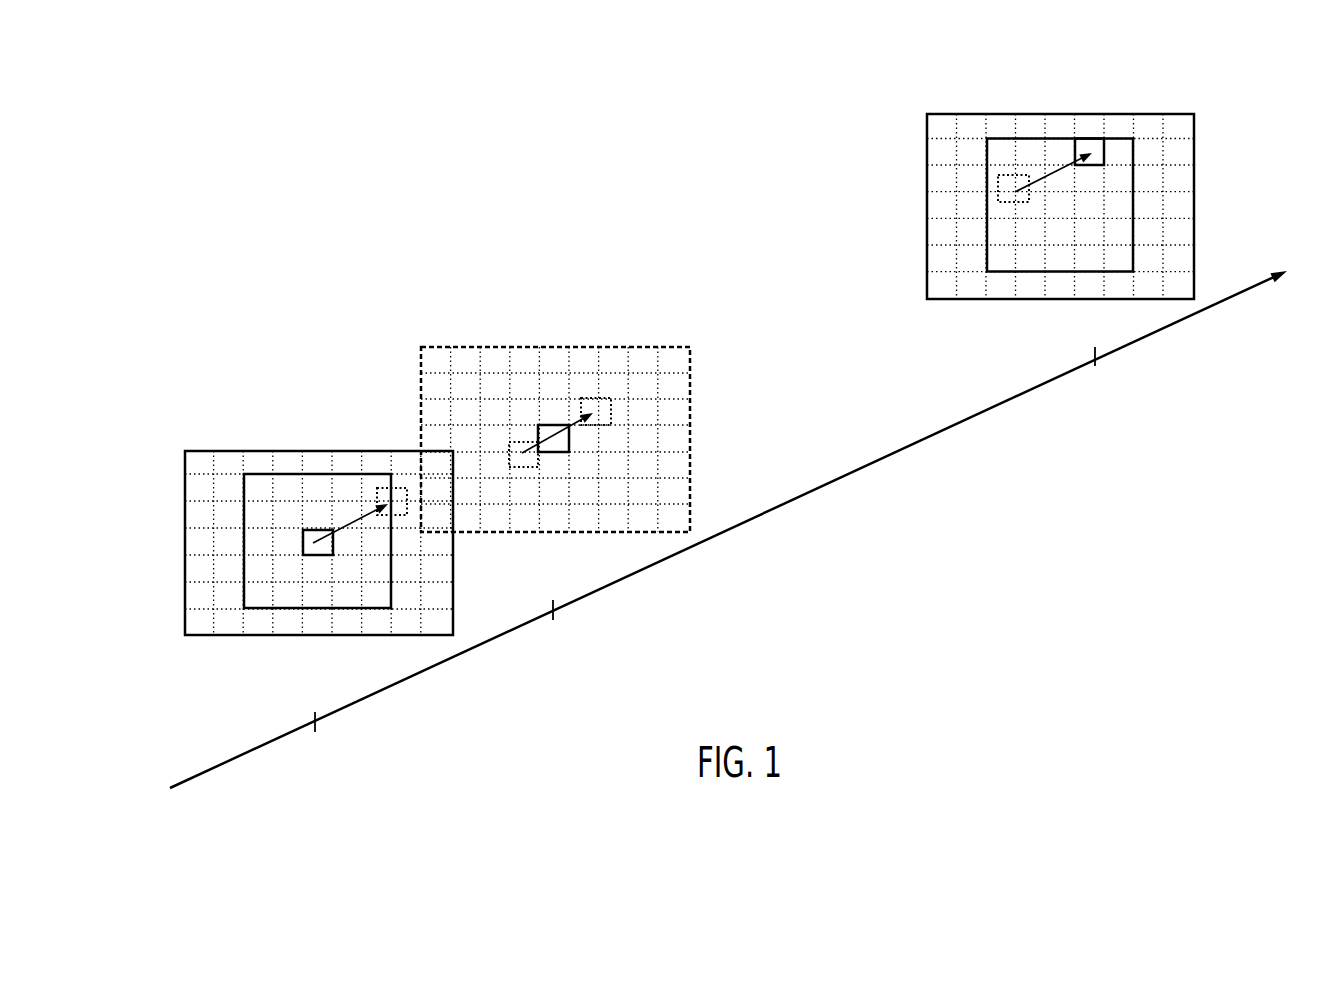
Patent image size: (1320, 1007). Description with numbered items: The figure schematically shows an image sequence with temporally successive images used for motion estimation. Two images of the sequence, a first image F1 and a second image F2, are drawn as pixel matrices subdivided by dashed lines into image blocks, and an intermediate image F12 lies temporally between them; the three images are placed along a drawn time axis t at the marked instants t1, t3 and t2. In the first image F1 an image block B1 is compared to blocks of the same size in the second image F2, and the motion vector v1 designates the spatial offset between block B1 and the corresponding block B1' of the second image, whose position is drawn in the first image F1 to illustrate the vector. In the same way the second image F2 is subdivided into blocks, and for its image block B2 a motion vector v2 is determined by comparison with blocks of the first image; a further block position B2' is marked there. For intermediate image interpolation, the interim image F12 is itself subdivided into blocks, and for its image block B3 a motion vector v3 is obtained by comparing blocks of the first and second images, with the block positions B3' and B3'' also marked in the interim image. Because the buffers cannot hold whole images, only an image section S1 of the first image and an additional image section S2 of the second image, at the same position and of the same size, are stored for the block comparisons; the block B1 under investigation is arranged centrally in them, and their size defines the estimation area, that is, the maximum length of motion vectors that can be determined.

The first image F1 is at (213, 451).
The intermediate image F12 is at (453, 347).
The second image F2 is at (958, 114).
The image section S1 is at (244, 528).
The additional image section S2 is at (1135, 170).
The image block B1 is at (311, 606).
The image block in the second image B1' is at (381, 460).
The image block of the second image B2 is at (1128, 110).
The displaced block position in second frame B2' is at (1016, 125).
The image block of the interim image B3 is at (640, 440).
The backward-projected block position B3' is at (533, 507).
The forward-projected block position B3'' is at (571, 351).
The motion vector v1 is at (351, 517).
The motion vector v2 is at (1052, 168).
The motion vector v3 is at (535, 440).
The time axis t is at (728, 529).
The time instant of first frame t1 is at (315, 739).
The time instant of second frame t2 is at (1096, 373).
The time instant of intermediate frame t3 is at (555, 626).